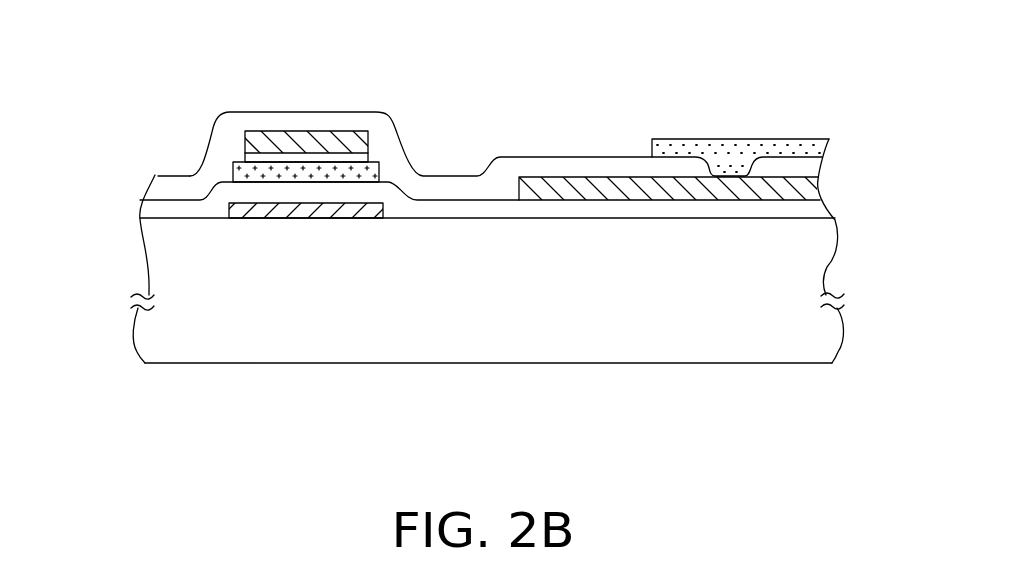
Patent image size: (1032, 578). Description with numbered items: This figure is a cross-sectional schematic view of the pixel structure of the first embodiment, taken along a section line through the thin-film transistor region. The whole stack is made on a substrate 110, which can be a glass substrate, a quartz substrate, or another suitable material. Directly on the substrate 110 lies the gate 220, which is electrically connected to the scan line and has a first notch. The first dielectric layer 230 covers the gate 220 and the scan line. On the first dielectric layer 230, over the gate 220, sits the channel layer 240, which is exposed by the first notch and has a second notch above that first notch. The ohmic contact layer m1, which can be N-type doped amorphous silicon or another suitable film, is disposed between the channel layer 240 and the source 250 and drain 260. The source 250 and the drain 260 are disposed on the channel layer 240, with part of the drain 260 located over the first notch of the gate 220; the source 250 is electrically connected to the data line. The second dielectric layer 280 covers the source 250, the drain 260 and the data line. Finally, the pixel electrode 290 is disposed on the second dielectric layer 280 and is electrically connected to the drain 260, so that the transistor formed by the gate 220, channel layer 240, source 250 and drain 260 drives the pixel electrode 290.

The substrate 110 is at (820, 342).
The gate 220 is at (303, 213).
The first dielectric layer 230 is at (160, 210).
The ohmic contact layer m1 is at (377, 172).
The source 250 is at (280, 143).
The second dielectric layer 280 is at (163, 190).
The channel layer 240 is at (403, 148).
The drain 260 is at (613, 187).
The pixel electrode 290 is at (792, 142).